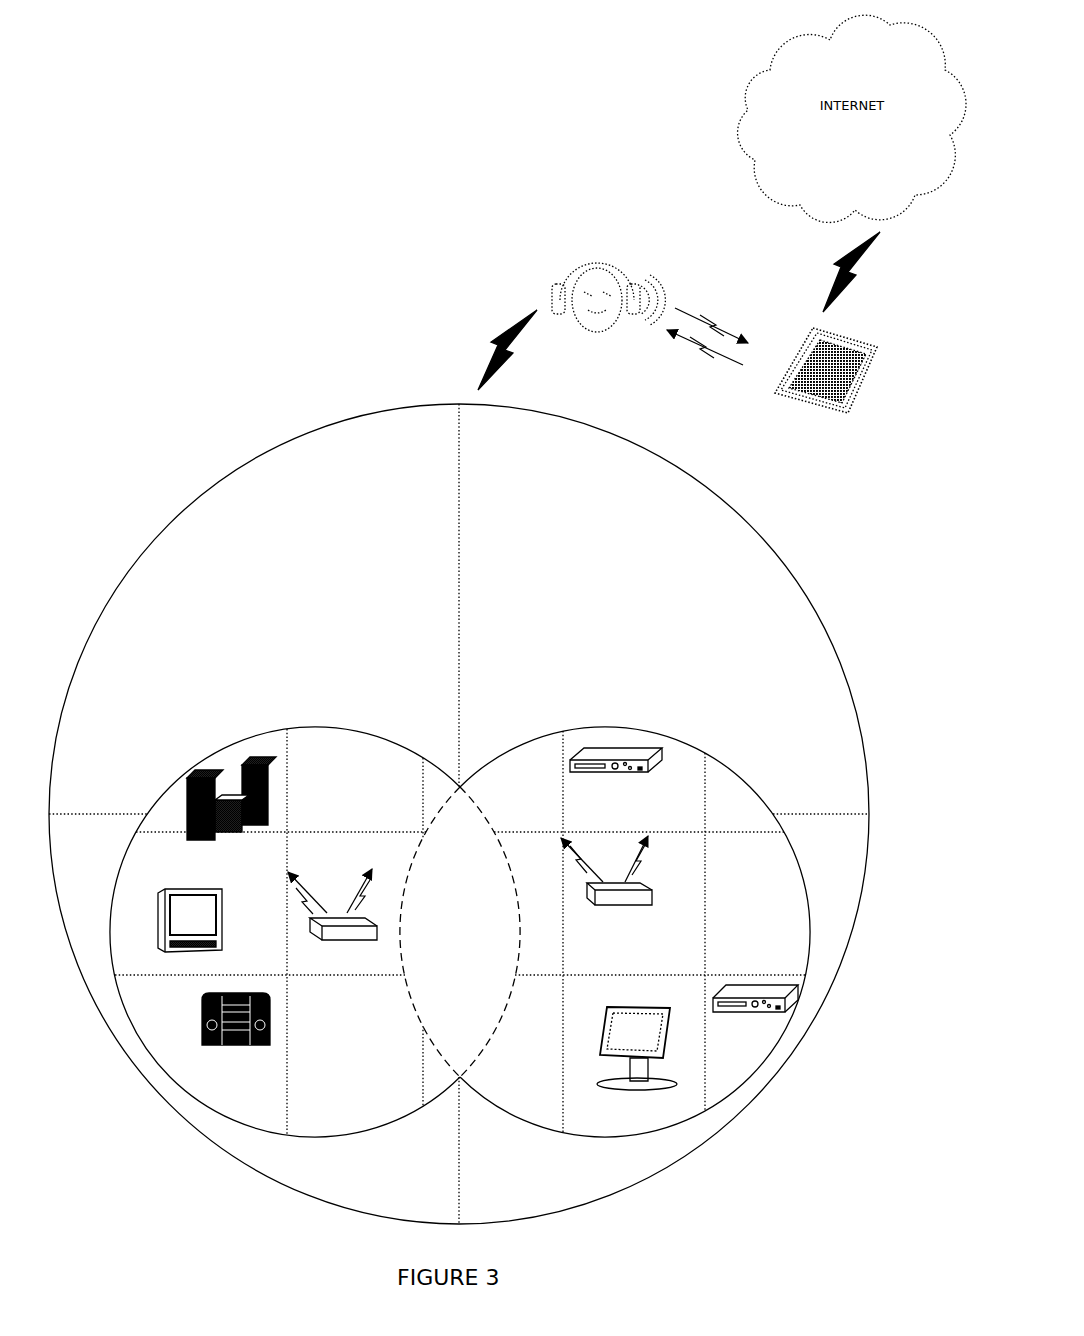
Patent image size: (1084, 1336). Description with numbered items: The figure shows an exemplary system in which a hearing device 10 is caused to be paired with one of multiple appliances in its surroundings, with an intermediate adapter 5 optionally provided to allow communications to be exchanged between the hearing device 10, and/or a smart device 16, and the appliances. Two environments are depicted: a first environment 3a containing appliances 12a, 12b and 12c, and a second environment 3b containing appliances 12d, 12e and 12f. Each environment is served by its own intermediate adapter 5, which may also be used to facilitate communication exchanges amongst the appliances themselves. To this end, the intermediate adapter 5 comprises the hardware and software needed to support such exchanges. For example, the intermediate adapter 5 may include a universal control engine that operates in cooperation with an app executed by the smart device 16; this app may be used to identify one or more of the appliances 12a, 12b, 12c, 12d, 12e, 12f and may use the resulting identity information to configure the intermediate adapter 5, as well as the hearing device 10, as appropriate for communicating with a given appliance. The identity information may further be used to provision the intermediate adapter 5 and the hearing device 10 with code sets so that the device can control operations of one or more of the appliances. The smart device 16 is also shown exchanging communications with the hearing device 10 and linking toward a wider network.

The hearing device 10 is at (622, 284).
The smart device 16 is at (840, 415).
The environment 3a is at (307, 725).
The environment 3b is at (702, 752).
The intermediate adapter 5 is at (350, 932).
The appliance 12a is at (220, 778).
The appliance 12b is at (165, 915).
The appliance 12c is at (203, 1045).
The appliance 12d is at (652, 1087).
The appliance 12e is at (778, 1008).
The appliance 12f is at (602, 743).